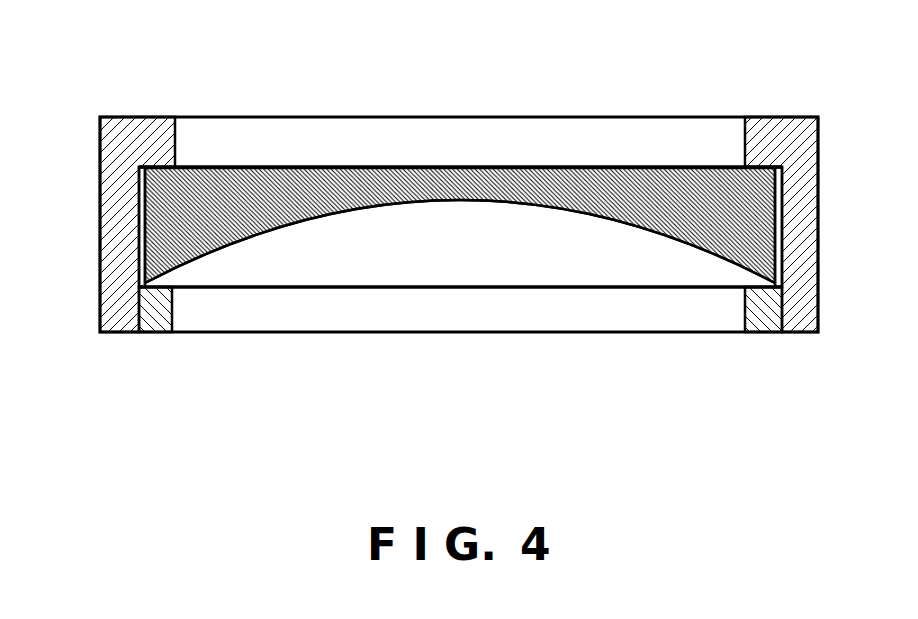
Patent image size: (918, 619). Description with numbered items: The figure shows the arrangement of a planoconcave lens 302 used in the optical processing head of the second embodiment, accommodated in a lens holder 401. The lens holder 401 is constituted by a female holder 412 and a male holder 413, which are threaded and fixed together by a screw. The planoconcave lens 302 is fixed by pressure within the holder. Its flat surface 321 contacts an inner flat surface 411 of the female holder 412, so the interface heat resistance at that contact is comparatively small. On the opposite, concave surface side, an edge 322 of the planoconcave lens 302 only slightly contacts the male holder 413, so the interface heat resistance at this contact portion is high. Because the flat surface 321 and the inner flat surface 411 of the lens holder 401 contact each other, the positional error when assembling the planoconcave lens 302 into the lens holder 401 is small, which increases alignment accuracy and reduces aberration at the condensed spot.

The lens holder 401 is at (88, 82).
The planoconcave lens 302 is at (232, 183).
The flat surface 321 is at (433, 165).
The edge 322 is at (172, 290).
The inner flat surface 411 is at (140, 173).
The female holder 412 is at (122, 152).
The male holder 413 is at (148, 333).